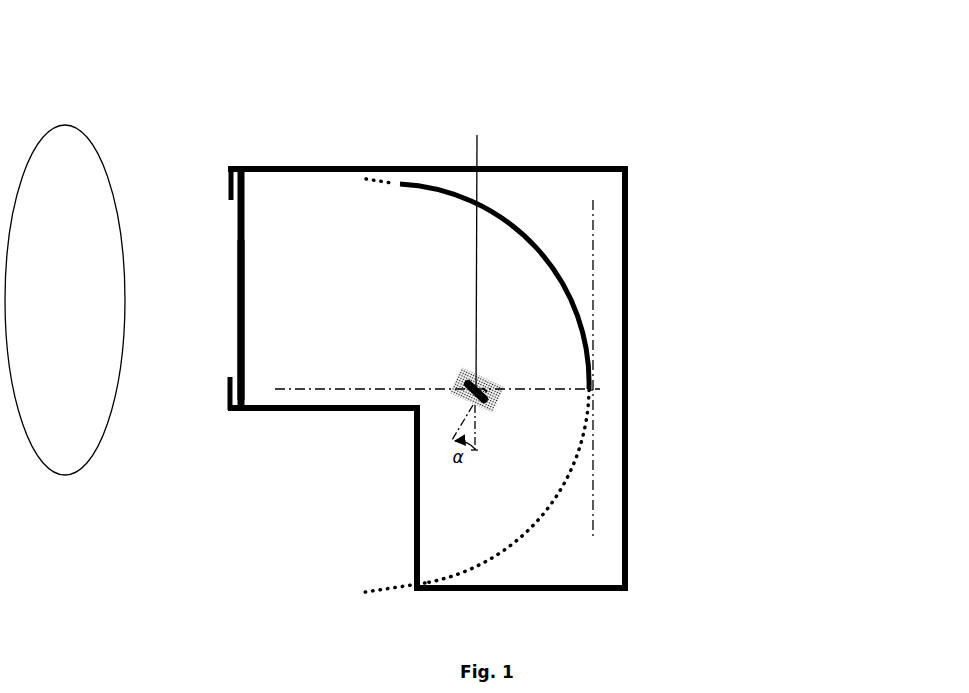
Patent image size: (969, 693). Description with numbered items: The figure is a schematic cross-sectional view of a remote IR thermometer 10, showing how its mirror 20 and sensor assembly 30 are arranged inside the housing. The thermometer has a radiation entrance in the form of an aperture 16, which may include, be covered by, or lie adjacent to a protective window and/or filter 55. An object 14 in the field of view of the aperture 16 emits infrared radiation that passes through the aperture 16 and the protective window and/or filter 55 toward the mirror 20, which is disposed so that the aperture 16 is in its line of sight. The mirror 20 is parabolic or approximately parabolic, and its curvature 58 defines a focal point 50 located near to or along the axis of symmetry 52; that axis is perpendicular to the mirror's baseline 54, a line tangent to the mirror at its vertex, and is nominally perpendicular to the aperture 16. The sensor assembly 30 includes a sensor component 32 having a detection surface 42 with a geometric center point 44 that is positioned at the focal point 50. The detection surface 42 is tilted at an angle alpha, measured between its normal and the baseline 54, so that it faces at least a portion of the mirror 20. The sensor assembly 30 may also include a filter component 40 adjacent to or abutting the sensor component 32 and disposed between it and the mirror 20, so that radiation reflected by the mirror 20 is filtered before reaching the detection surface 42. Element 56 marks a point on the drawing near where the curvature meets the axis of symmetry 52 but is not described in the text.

The remote IR thermometer 10 is at (776, 180).
The object 14 is at (68, 383).
The aperture 16 is at (214, 271).
The mirror 20 is at (581, 323).
The sensor assembly 30 is at (470, 388).
The sensor component 32 is at (450, 346).
The filter component 40 is at (490, 384).
The detection surface 42 is at (477, 255).
The geometric center point 44 is at (485, 386).
The focal point 50 is at (497, 384).
The axis of symmetry 52 is at (330, 389).
The baseline 54 is at (592, 533).
The protective window and/or filter 55 is at (237, 327).
The intersection point 56 is at (592, 391).
The parabolic curvature 58 is at (393, 182).